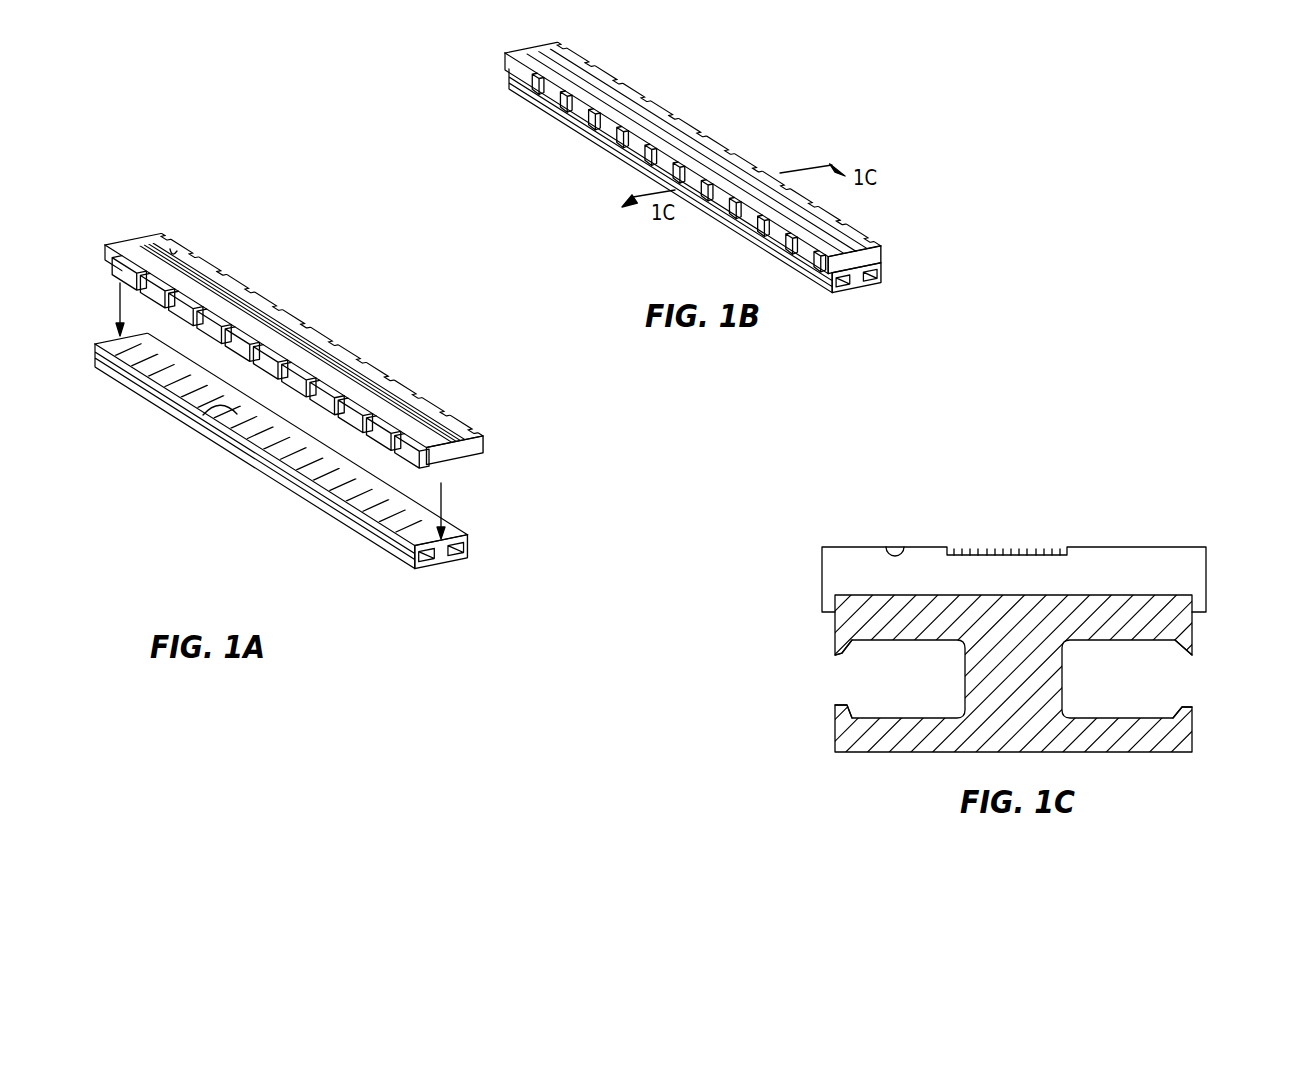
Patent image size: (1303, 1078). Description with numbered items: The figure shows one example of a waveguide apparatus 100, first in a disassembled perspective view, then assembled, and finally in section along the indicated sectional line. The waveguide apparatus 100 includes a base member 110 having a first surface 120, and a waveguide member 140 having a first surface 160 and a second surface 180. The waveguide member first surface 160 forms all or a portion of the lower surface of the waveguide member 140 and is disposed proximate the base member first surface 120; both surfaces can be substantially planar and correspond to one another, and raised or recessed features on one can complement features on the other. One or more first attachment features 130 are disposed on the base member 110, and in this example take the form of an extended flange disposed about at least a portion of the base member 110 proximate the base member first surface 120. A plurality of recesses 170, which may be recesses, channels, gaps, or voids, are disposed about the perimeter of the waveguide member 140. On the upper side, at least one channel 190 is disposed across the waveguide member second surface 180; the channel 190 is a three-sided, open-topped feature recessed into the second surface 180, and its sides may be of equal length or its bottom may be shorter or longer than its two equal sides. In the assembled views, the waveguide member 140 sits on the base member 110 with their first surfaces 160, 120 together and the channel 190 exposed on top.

In FIG. 1A, the waveguide apparatus 100 is at (233, 216).
In FIG. 1A, the base member 110 is at (321, 478).
In FIG. 1B, the base member 110 is at (733, 203).
In FIG. 1C, the base member 110 is at (998, 659).
In FIG. 1A, the base member first surface 120 is at (212, 408).
In FIG. 1C, the base member first surface 120 is at (918, 606).
In FIG. 1A, the first attachment features 130 is at (470, 549).
In FIG. 1B, the first attachment features 130 is at (886, 268).
In FIG. 1C, the first attachment features 130 is at (842, 655).
In FIG. 1A, the waveguide member 140 is at (339, 305).
In FIG. 1B, the waveguide member 140 is at (734, 157).
In FIG. 1C, the waveguide member 140 is at (1021, 547).
In FIG. 1A, the waveguide member first surface 160 is at (440, 448).
In FIG. 1C, the waveguide member first surface 160 is at (1095, 595).
In FIG. 1A, the recesses 170 is at (392, 378).
In FIG. 1A, the waveguide member second surface 180 is at (172, 252).
In FIG. 1C, the waveguide member second surface 180 is at (893, 549).
In FIG. 1A, the channel 190 is at (248, 307).
In FIG. 1B, the channel 190 is at (833, 240).
In FIG. 1C, the channel 190 is at (1009, 553).